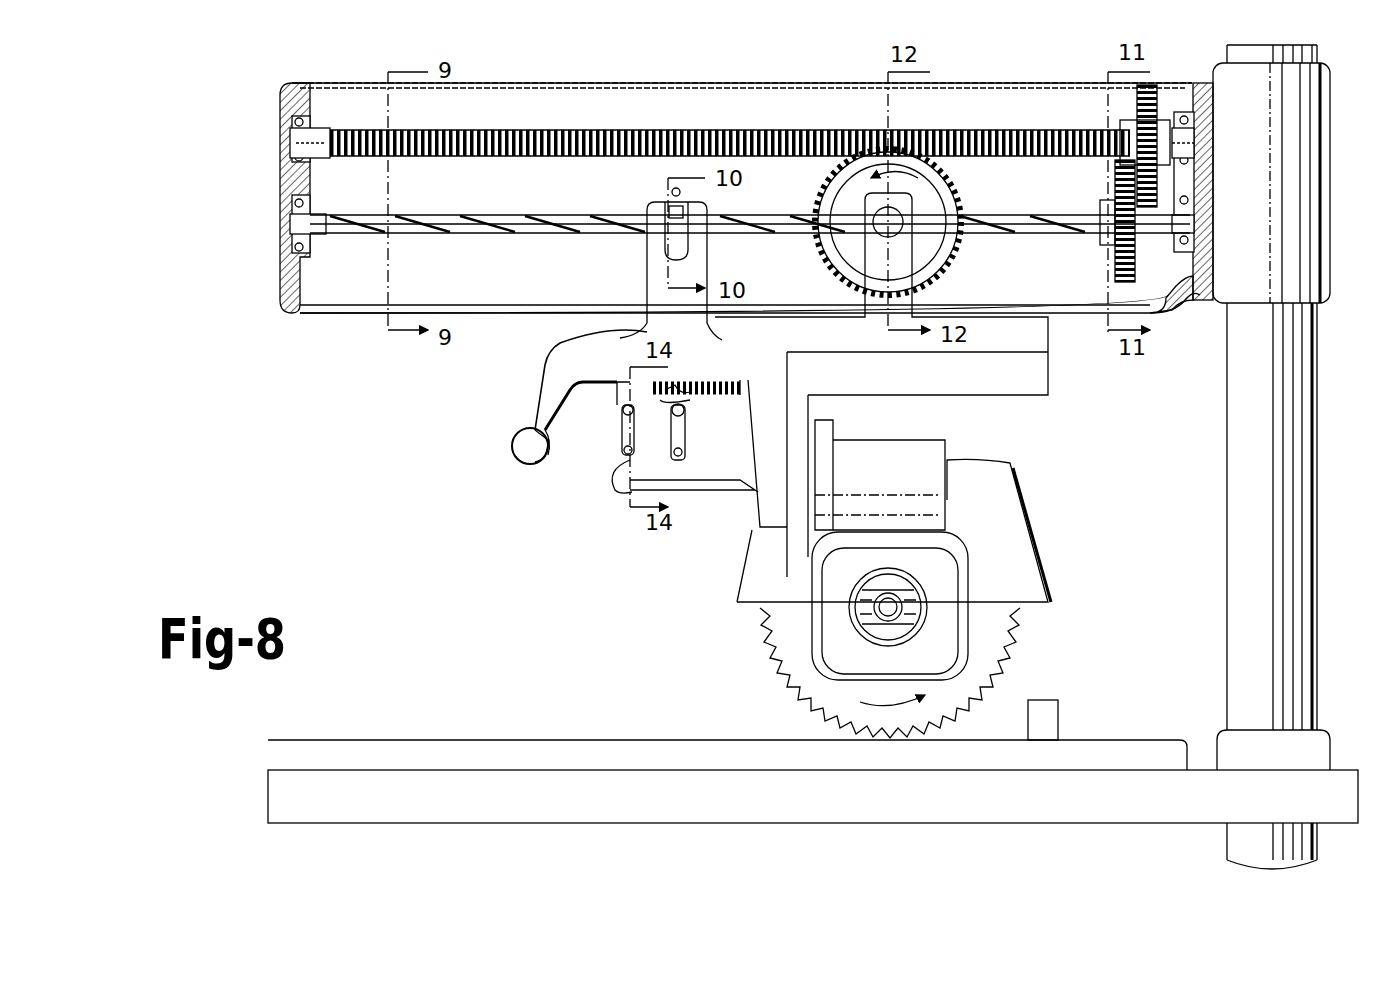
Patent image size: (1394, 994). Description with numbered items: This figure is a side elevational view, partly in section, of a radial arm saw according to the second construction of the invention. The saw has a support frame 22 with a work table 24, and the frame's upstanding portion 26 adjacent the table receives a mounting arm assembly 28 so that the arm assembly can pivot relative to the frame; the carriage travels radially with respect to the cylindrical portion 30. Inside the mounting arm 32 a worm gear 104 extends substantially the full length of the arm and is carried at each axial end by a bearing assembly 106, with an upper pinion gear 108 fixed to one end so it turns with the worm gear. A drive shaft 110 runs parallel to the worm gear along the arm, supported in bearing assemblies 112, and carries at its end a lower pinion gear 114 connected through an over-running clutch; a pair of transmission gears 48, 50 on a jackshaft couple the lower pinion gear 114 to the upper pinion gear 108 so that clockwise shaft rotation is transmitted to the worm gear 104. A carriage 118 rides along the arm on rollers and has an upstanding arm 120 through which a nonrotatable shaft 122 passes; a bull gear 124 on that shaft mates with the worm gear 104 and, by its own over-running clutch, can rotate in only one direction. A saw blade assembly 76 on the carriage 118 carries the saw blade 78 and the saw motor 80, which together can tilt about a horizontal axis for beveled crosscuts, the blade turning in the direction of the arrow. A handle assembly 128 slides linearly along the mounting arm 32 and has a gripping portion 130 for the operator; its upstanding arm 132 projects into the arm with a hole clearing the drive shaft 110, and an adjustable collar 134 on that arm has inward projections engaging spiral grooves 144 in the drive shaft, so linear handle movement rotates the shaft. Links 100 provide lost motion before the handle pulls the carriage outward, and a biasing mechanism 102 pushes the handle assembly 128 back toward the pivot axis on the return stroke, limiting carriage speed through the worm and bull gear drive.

The support frame 22 is at (1318, 838).
The work table 24 is at (560, 740).
The upstanding portion 26 is at (1316, 647).
The mounting arm assembly 28 is at (1178, 318).
The cylindrical portion 30 is at (1305, 225).
The mounting arm 32 is at (1005, 85).
The transmission gear 48 is at (1112, 125).
The transmission gear 50 is at (1135, 100).
The saw blade assembly 76 is at (1025, 480).
The saw blade 78 is at (777, 652).
The saw motor 80 is at (935, 575).
The links 100 is at (620, 435).
The biasing mechanism 102 is at (735, 385).
The worm gear 104 is at (430, 130).
The bearing assembly 106 is at (283, 122).
The upper pinion gear 108 is at (1183, 100).
The drive shaft 110 is at (465, 215).
The bearing assemblies 112 is at (286, 205).
The lower pinion gear 114 is at (1196, 256).
The carriage 118 is at (1052, 345).
The upstanding arm 120 is at (905, 300).
The nonrotatable shaft 122 is at (903, 218).
The bull gear 124 is at (935, 195).
The handle assembly 128 is at (538, 380).
The gripping portion 130 is at (528, 460).
The upstanding arm 132 is at (688, 276).
The adjustable collar 134 is at (690, 197).
The spiral grooves 144 is at (350, 215).